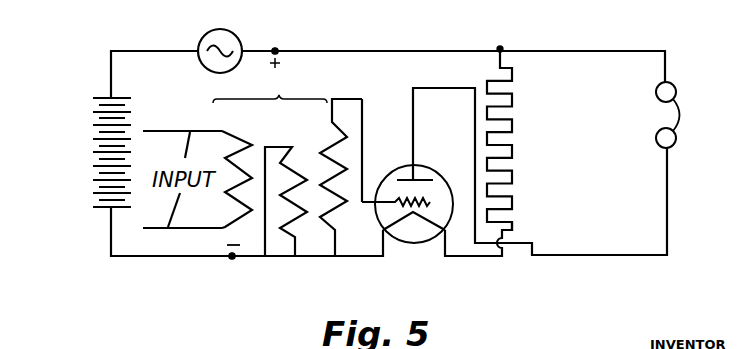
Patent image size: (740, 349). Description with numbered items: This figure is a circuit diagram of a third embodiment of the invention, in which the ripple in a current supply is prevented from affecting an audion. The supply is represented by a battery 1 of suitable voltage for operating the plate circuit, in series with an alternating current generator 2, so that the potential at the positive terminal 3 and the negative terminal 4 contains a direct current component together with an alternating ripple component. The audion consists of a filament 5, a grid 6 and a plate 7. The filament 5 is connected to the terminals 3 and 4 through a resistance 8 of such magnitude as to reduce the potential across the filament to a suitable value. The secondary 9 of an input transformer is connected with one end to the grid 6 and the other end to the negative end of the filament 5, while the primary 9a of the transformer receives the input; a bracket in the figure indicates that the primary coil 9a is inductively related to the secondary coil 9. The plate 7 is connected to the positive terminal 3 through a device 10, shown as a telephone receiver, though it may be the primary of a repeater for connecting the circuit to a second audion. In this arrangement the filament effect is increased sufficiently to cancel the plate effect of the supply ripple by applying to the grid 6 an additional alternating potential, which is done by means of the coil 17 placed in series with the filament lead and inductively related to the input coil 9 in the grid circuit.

The battery 1 is at (92, 152).
The alternating current generator 2 is at (253, 28).
The positive terminal 3 is at (277, 49).
The negative terminal 4 is at (233, 260).
The filament 5 is at (412, 220).
The grid 6 is at (396, 202).
The plate 7 is at (449, 148).
The resistance 8 is at (516, 165).
The secondary of input transformer 9 is at (322, 160).
The primary of input transformer 9a is at (236, 156).
The telephone receiver 10 is at (683, 104).
The coil 17 is at (297, 162).